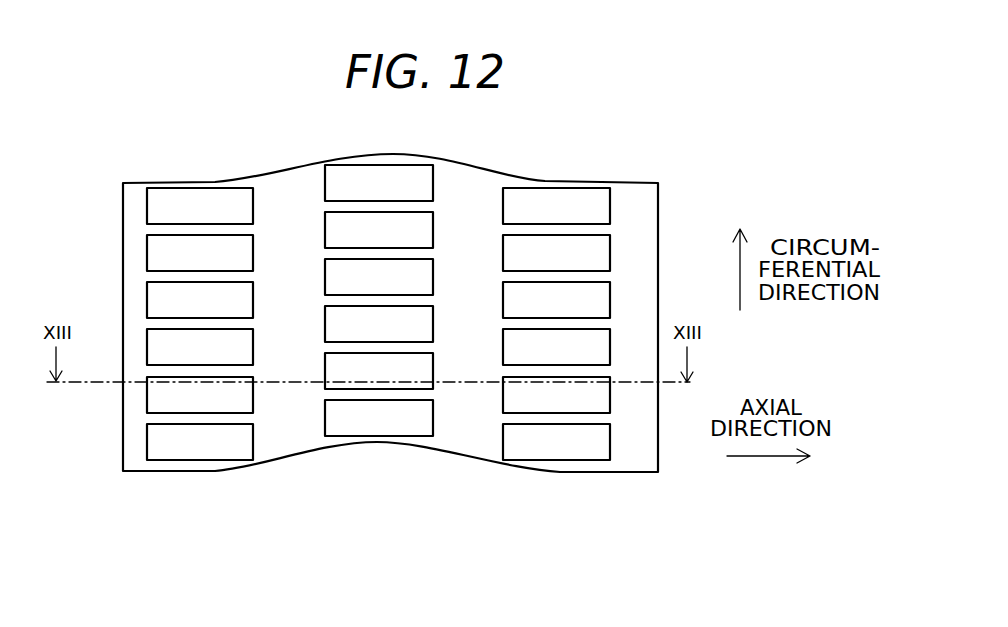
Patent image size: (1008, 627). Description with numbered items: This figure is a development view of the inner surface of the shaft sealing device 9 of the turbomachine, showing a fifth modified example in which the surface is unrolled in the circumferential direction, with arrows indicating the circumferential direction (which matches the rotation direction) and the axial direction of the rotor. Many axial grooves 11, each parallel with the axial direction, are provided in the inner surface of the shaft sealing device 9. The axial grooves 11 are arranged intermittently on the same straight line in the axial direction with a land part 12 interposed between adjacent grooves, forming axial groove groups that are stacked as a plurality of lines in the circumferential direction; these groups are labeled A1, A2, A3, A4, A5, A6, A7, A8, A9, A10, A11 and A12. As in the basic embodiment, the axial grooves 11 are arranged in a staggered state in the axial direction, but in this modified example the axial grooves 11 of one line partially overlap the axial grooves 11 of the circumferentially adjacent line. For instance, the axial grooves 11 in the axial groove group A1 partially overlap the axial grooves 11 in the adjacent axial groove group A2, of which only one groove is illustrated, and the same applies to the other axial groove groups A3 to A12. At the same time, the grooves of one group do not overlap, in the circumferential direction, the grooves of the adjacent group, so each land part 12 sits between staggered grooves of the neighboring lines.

The shaft sealing device 9 is at (658, 210).
The axial groove 11 is at (198, 460).
The land part 12 is at (295, 440).
The axial groove group A1 is at (138, 447).
The axial groove group A2 is at (316, 422).
The axial groove group A3 is at (138, 400).
The axial groove group A4 is at (316, 373).
The axial groove group A5 is at (138, 352).
The axial groove group A6 is at (316, 327).
The axial groove group A7 is at (138, 305).
The axial groove group A8 is at (316, 280).
The axial groove group A9 is at (138, 258).
The axial groove group A10 is at (316, 235).
The axial groove group A11 is at (138, 211).
The axial groove group A12 is at (316, 189).